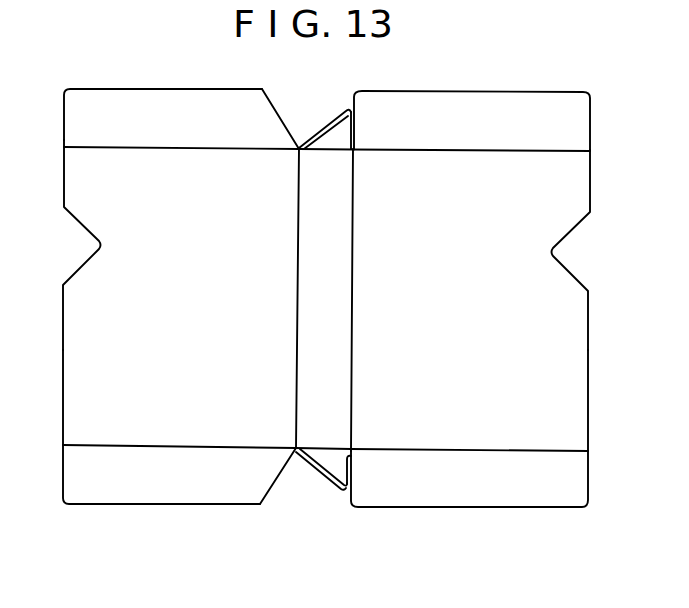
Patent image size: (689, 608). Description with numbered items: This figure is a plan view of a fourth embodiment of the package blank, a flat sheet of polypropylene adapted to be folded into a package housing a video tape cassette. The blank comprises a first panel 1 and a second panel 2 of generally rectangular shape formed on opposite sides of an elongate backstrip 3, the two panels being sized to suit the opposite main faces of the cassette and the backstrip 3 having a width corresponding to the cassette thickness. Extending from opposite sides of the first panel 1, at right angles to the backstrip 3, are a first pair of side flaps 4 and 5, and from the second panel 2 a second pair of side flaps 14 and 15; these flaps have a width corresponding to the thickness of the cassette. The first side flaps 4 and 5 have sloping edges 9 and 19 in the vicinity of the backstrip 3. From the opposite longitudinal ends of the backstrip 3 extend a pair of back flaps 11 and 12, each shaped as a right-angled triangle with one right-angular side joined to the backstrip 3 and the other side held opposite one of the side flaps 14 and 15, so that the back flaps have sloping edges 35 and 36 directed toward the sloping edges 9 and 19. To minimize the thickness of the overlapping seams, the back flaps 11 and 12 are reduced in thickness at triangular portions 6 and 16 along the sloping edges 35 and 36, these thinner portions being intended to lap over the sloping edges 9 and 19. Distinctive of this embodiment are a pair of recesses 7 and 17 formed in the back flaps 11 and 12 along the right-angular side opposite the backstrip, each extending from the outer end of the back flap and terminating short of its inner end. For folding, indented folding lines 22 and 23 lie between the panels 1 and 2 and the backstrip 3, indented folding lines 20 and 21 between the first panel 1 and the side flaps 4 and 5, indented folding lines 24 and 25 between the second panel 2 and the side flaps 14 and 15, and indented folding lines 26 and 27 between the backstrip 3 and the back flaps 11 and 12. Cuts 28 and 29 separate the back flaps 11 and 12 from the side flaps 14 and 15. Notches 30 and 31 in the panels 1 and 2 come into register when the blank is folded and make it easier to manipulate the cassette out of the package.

The first panel 1 is at (184, 281).
The second panel 2 is at (448, 285).
The backstrip 3 is at (332, 282).
The side flap 4 is at (145, 132).
The side flap 5 is at (137, 487).
The triangular portion 6 is at (333, 120).
The recess 7 is at (350, 111).
The sloping edge 9 is at (291, 130).
The back flap 11 is at (325, 142).
The back flap 12 is at (330, 467).
The side flap 14 is at (468, 136).
The side flap 15 is at (487, 490).
The triangular portion 16 is at (341, 490).
The recess 17 is at (348, 477).
The sloping edge 19 is at (268, 506).
The indented folding line 20 is at (222, 150).
The indented folding line 21 is at (199, 445).
The indented folding line 22 is at (296, 330).
The indented folding line 23 is at (353, 323).
The indented folding line 24 is at (448, 153).
The indented folding line 25 is at (452, 450).
The indented folding line 26 is at (330, 151).
The indented folding line 27 is at (337, 447).
The cut 28 is at (354, 148).
The cut 29 is at (353, 452).
The notch 30 is at (82, 262).
The notch 31 is at (576, 232).
The sloping edge 35 is at (292, 138).
The sloping edge 36 is at (315, 468).